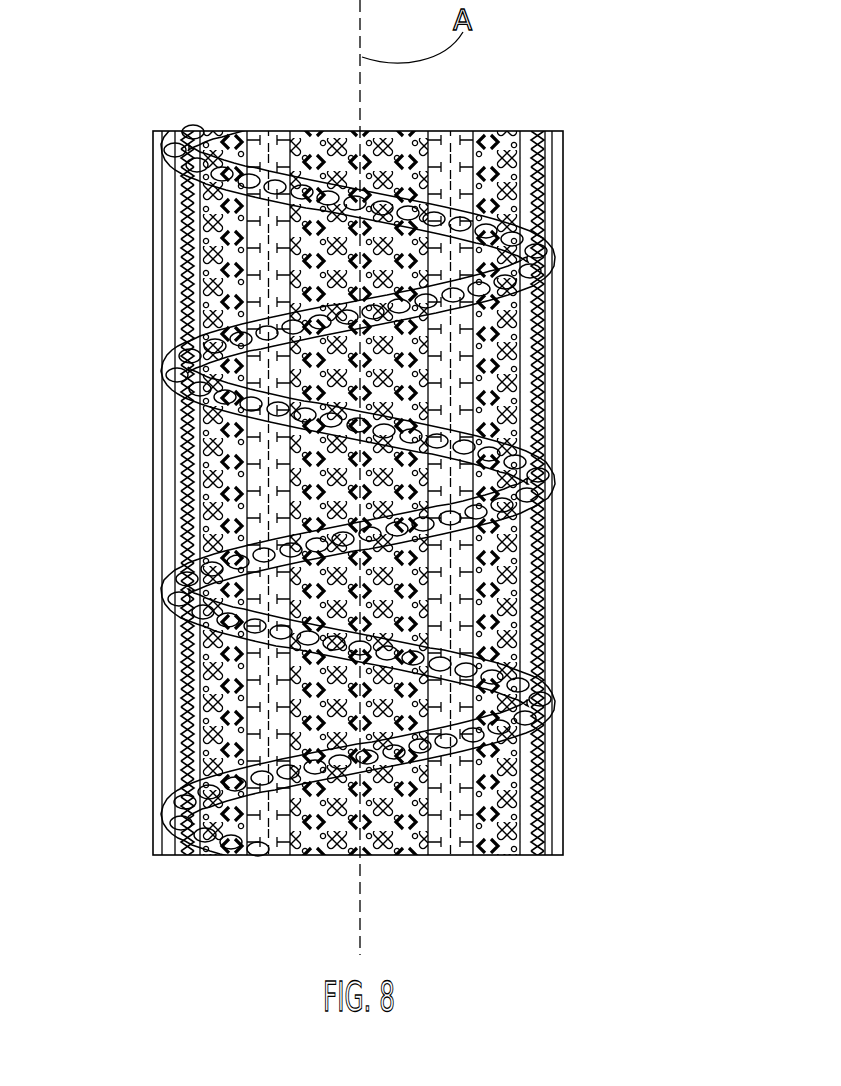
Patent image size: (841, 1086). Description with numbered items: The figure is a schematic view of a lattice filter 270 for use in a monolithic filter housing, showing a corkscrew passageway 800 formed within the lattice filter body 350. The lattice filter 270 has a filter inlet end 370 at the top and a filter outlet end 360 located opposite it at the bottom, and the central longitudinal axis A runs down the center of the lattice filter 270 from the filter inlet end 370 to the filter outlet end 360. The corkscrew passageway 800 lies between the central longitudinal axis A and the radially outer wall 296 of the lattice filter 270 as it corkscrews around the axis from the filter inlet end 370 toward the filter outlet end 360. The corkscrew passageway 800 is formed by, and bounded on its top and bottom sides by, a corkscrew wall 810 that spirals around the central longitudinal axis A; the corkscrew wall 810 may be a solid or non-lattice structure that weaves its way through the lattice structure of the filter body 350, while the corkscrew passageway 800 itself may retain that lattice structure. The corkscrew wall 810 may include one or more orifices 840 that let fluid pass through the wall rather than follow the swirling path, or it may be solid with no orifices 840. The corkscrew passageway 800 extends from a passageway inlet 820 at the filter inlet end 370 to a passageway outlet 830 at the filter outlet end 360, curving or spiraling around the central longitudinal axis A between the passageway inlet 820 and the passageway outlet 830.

The lattice filter 270 is at (584, 173).
The radially outer wall 296 is at (564, 400).
The lattice filter body 350 is at (552, 315).
The filter inlet end 370 is at (498, 131).
The filter outlet end 360 is at (448, 855).
The passageway inlet 820 is at (337, 131).
The passageway outlet 830 is at (317, 855).
The corkscrew passageway 800 is at (187, 290).
The corkscrew wall 810 is at (173, 387).
The orifices 840 is at (315, 378).